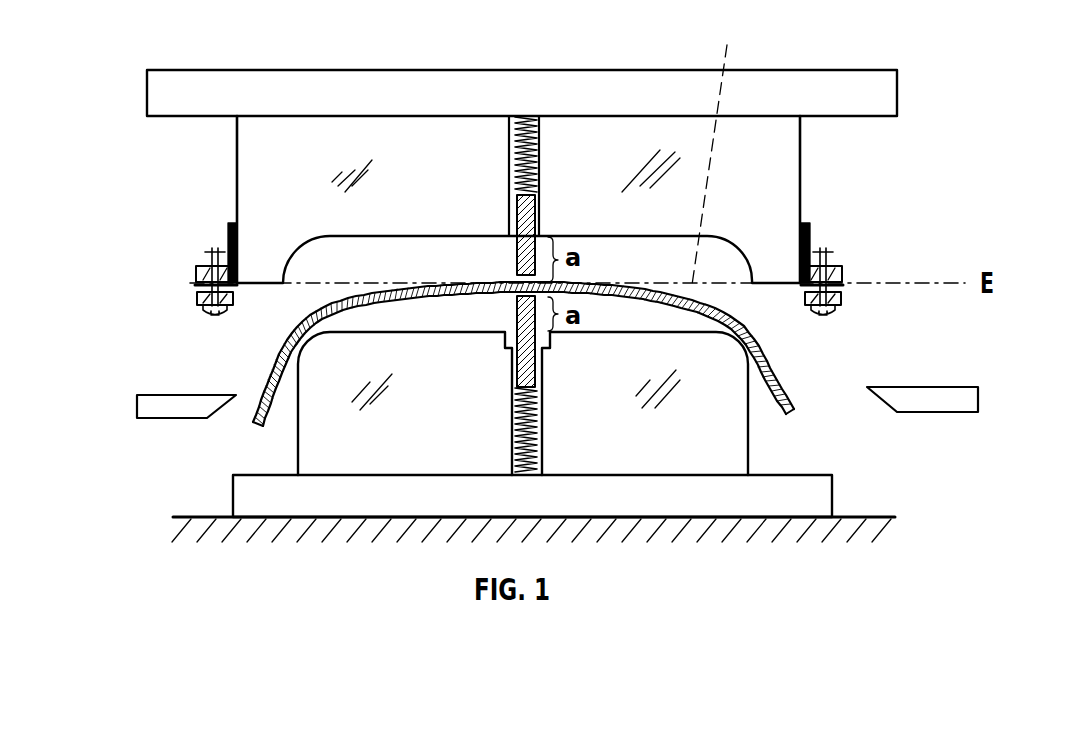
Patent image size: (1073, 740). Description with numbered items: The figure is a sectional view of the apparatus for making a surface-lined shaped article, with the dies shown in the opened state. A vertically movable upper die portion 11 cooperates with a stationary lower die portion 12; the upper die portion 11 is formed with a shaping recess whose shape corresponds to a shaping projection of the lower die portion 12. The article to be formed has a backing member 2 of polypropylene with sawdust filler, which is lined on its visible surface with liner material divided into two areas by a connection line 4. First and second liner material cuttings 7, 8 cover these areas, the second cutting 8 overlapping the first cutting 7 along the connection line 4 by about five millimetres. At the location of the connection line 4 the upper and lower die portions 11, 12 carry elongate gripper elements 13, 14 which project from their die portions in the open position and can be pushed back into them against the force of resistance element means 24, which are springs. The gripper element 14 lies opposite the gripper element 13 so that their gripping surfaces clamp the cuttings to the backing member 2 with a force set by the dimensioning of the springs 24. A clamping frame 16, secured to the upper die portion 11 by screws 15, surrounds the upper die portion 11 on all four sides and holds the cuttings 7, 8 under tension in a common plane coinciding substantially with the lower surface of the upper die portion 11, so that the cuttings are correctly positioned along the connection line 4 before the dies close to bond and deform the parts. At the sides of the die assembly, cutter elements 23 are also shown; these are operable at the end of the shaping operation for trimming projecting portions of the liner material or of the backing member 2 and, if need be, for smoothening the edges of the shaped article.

The backing member 2 is at (255, 418).
The connection line 4 is at (503, 276).
The first liner material cutting 7 is at (315, 283).
The second liner material cutting 8 is at (712, 149).
The upper die portion 11 is at (770, 172).
The lower die portion 12 is at (702, 452).
The gripper element 13 is at (510, 228).
The gripper element 14 is at (530, 355).
The screws 15 is at (213, 314).
The clamping frame 16 is at (195, 271).
The gripping tongs 23 is at (155, 405).
The resistance element means 24 is at (507, 148).